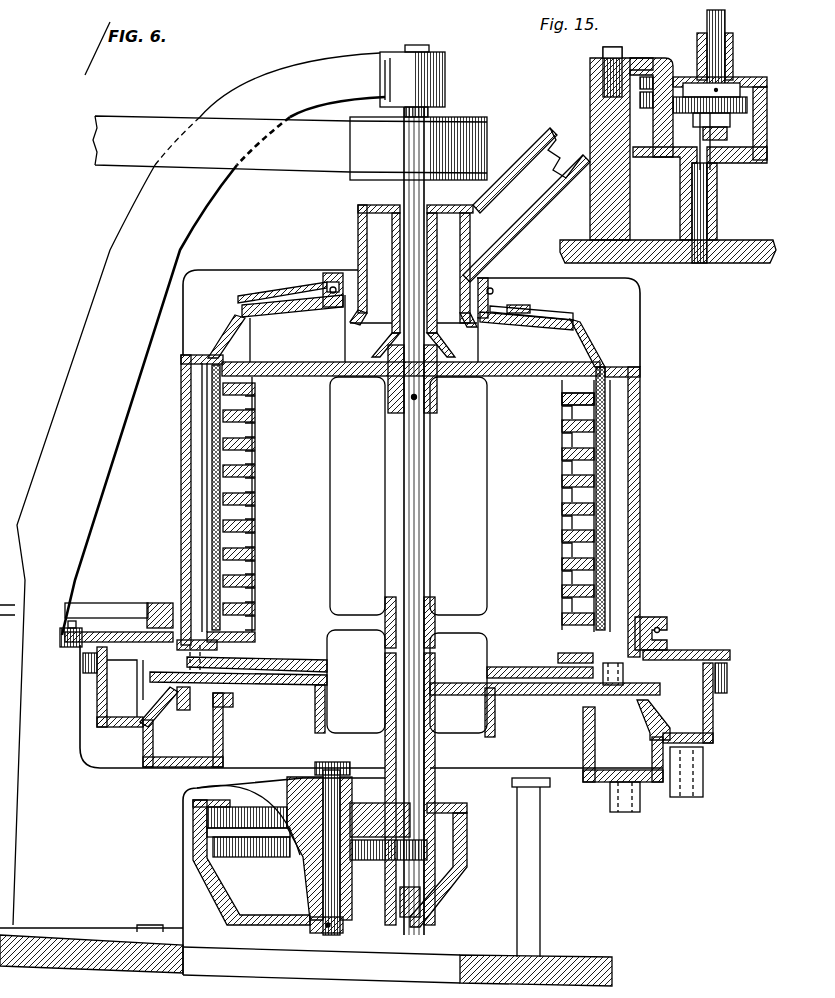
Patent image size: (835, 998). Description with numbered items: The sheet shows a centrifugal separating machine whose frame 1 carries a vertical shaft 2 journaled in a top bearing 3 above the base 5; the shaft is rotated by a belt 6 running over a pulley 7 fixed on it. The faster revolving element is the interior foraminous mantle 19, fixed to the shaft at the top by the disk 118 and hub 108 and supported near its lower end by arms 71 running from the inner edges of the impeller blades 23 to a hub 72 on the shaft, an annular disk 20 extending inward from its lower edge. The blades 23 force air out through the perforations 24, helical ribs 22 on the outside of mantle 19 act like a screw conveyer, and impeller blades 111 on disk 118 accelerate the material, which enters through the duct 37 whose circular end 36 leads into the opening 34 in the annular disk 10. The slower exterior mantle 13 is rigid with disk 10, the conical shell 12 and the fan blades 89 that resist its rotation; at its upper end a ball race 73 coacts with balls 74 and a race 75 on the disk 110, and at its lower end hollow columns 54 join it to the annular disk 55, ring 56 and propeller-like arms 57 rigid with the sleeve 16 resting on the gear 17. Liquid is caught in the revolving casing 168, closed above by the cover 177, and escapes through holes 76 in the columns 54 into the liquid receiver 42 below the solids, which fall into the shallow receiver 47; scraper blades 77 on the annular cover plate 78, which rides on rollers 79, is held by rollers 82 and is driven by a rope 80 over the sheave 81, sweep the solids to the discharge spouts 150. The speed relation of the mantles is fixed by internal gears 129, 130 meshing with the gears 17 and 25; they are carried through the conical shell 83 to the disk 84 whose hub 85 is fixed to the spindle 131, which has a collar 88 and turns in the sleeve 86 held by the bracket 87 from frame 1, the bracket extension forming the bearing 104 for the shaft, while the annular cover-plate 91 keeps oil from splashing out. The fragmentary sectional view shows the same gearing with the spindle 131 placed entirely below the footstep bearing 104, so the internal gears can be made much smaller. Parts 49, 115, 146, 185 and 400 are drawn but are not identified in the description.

In FIG. 6, the frame 1 is at (135, 200).
In FIG. 6, the shaft 2 is at (416, 50).
In FIG. 15, the shaft 2 is at (720, 24).
In FIG. 6, the top bearing 3 is at (447, 68).
In FIG. 6, the base 5 is at (137, 968).
In FIG. 15, the base 5 is at (747, 248).
In FIG. 6, the belt 6 is at (155, 125).
In FIG. 6, the pulley 7 is at (462, 125).
In FIG. 6, the annular disk 10 is at (566, 316).
In FIG. 6, the conical shell 12 is at (592, 342).
In FIG. 6, the foraminous mantle 13 is at (606, 432).
In FIG. 6, the sleeve 16 is at (436, 762).
In FIG. 15, the sleeve 16 is at (734, 55).
In FIG. 6, the gear 17 is at (458, 870).
In FIG. 15, the gear 17 is at (750, 103).
In FIG. 6, the foraminous mantle 19 is at (563, 400).
In FIG. 6, the annular disk 20 is at (514, 666).
In FIG. 6, the helically disposed ribs 22 is at (218, 345).
In FIG. 6, the impeller blades 23 is at (488, 468).
In FIG. 6, the perforations 24 is at (563, 472).
In FIG. 6, the larger gear 25 is at (442, 812).
In FIG. 15, the larger gear 25 is at (747, 80).
In FIG. 6, the circular opening 34 is at (370, 322).
In FIG. 6, the circular end 36 is at (357, 216).
In FIG. 6, the feed supply duct 37 is at (512, 228).
In FIG. 6, the liquid receiver 42 is at (187, 727).
In FIG. 6, the receiver 47 is at (105, 704).
In FIG. 6, the inclined wall 49 is at (147, 717).
In FIG. 6, the short columns 54 is at (624, 672).
In FIG. 6, the annular disk 55 is at (287, 686).
In FIG. 6, the ring 56 is at (315, 712).
In FIG. 6, the arms 57 is at (474, 722).
In FIG. 6, the arms 71 is at (345, 614).
In FIG. 6, the hub 72 is at (430, 600).
In FIG. 6, the ball race 73 is at (335, 280).
In FIG. 6, the balls 74 is at (327, 287).
In FIG. 6, the race 75 is at (345, 272).
In FIG. 6, the holes 76 is at (226, 698).
In FIG. 6, the scraper blades 77 is at (115, 677).
In FIG. 6, the annular cover plate 78 is at (703, 652).
In FIG. 6, the rollers 79 is at (88, 660).
In FIG. 6, the rope 80 is at (97, 614).
In FIG. 6, the sheave 81 is at (647, 618).
In FIG. 6, the rollers 82 is at (63, 638).
In FIG. 6, the conical shell 83 is at (215, 882).
In FIG. 6, the disk 84 is at (246, 920).
In FIG. 15, the disk 84 is at (662, 168).
In FIG. 6, the hub 85 is at (345, 930).
In FIG. 6, the sleeve 86 is at (320, 876).
In FIG. 6, the bracket 87 is at (242, 780).
In FIG. 15, the bracket 87 is at (660, 60).
In FIG. 6, the collar 88 is at (335, 770).
In FIG. 6, the fan blades 89 is at (641, 330).
In FIG. 6, the annular cover-plate 91 is at (240, 797).
In FIG. 6, the bearing 104 is at (425, 900).
In FIG. 15, the bearing 104 is at (735, 133).
In FIG. 6, the hub 108 is at (432, 400).
In FIG. 6, the disk 110 is at (530, 312).
In FIG. 6, the impeller blades 111 is at (240, 308).
In FIG. 6, the pan wall 115 is at (590, 712).
In FIG. 6, the disk 118 is at (502, 378).
In FIG. 6, the internal gear 129 is at (213, 848).
In FIG. 15, the internal gear 129 is at (640, 104).
In FIG. 6, the internal gear 130 is at (207, 820).
In FIG. 15, the internal gear 130 is at (640, 92).
In FIG. 6, the spindle 131 is at (330, 897).
In FIG. 15, the spindle 131 is at (712, 195).
In FIG. 6, the tube 146 is at (615, 832).
In FIG. 6, the discharge spouts 150 is at (704, 762).
In FIG. 6, the revolving casing 168 is at (641, 472).
In FIG. 6, the cover 177 is at (632, 366).
In FIG. 15, the sleeve 185 is at (718, 212).
In FIG. 15, the housing wall 400 is at (603, 187).